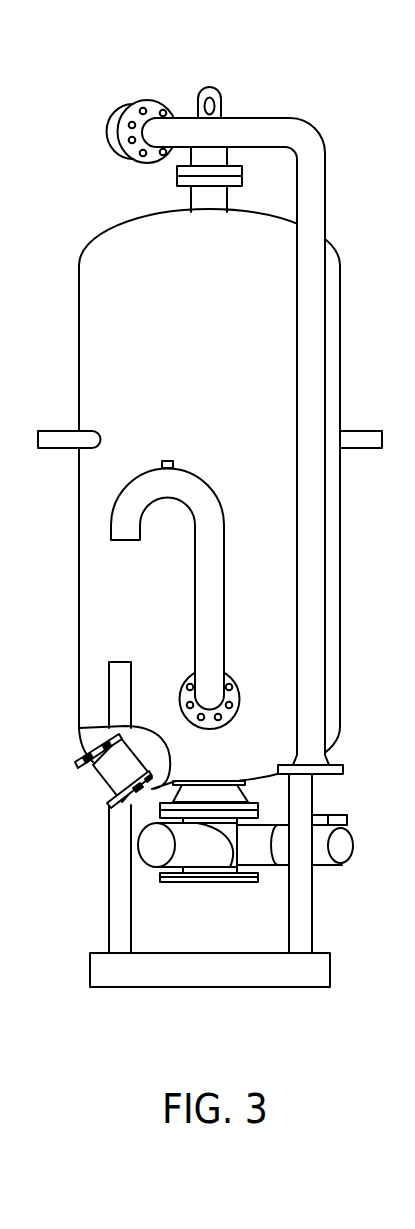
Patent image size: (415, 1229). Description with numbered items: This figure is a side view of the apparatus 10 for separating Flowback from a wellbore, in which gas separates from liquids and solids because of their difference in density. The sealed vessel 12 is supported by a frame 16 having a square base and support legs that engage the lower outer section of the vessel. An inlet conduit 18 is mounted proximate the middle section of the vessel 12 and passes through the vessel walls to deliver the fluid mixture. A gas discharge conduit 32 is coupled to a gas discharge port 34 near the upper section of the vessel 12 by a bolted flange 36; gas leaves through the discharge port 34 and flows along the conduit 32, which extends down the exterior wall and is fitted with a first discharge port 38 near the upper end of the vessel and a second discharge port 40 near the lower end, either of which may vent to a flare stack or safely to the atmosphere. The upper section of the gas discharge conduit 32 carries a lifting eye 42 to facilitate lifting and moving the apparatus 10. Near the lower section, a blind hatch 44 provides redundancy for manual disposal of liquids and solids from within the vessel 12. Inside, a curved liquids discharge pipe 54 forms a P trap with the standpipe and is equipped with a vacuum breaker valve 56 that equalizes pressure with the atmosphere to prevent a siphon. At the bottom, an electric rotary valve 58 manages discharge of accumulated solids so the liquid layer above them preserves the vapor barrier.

The apparatus 10 is at (108, 57).
The vessel 12 is at (93, 303).
The frame 16 is at (113, 920).
The inlet conduit 18 is at (67, 437).
The gas discharge conduit 32 is at (317, 202).
The gas discharge port 34 is at (203, 203).
The bolted flange 36 is at (177, 180).
The first discharge port 38 is at (118, 128).
The second discharge port 40 is at (330, 775).
The lifting eye 42 is at (222, 105).
The blind hatch 44 is at (90, 787).
The liquids discharge pipe 54 is at (207, 498).
The vacuum breaker valve 56 is at (168, 460).
The electric rotary valve 58 is at (188, 882).